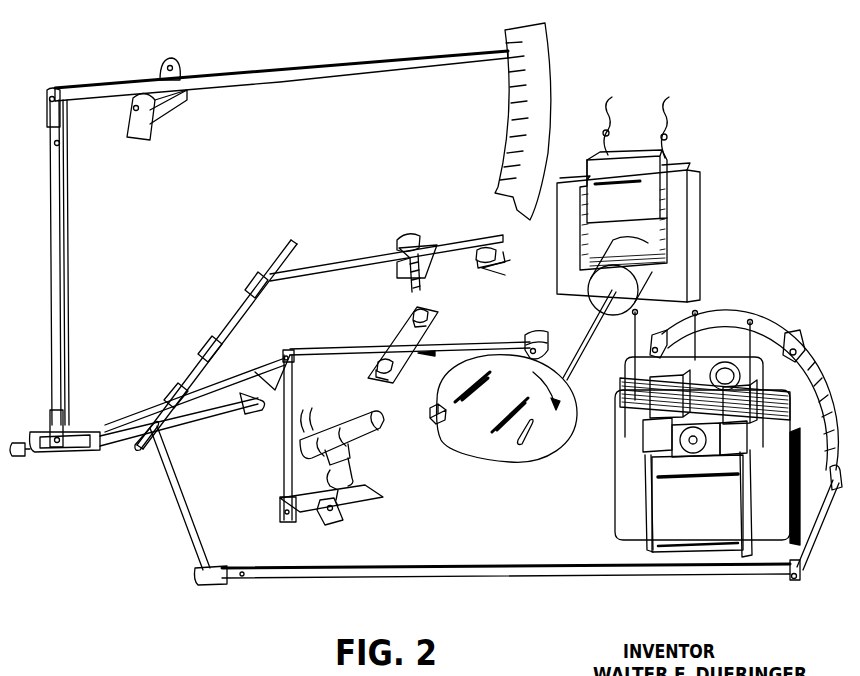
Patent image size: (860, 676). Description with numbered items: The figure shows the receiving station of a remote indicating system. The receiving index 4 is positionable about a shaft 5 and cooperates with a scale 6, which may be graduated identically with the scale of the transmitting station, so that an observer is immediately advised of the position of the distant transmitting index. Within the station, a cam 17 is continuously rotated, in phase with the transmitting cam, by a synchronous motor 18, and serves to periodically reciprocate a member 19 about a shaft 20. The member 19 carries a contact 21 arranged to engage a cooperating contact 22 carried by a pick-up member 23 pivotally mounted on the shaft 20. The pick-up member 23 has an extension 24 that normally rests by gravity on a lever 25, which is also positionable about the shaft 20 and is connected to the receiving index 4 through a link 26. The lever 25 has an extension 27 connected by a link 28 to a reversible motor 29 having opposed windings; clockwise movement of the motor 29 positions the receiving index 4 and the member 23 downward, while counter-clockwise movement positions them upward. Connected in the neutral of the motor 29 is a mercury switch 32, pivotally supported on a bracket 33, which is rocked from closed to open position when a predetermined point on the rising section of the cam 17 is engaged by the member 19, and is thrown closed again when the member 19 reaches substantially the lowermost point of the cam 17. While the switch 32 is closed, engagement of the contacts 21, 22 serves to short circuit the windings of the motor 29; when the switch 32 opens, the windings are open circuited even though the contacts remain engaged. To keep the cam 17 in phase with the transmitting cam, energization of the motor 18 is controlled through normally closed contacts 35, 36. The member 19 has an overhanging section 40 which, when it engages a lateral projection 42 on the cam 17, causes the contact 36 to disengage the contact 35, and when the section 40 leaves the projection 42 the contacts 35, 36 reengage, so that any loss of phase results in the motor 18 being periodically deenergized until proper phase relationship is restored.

The index 4 is at (327, 64).
The shaft 5 is at (178, 62).
The scale 6 is at (549, 55).
The cam 17 is at (543, 470).
The synchronous motor 18 is at (700, 242).
The member 19 is at (445, 347).
The shaft 20 is at (242, 308).
The contact 21 is at (395, 369).
The cooperating contact 22 is at (378, 358).
The pick-up member 23 is at (305, 374).
The extension 24 is at (246, 396).
The lever 25 is at (207, 417).
The link 26 is at (70, 244).
The extension 27 is at (180, 527).
The link 28 is at (470, 566).
The reversible motor 29 is at (803, 308).
The mercury switch 32 is at (382, 414).
The bracket 33 is at (327, 530).
The contact 35 is at (483, 268).
The contact 36 is at (505, 253).
The overhanging section 40 is at (541, 346).
The lateral projection 42 is at (440, 425).